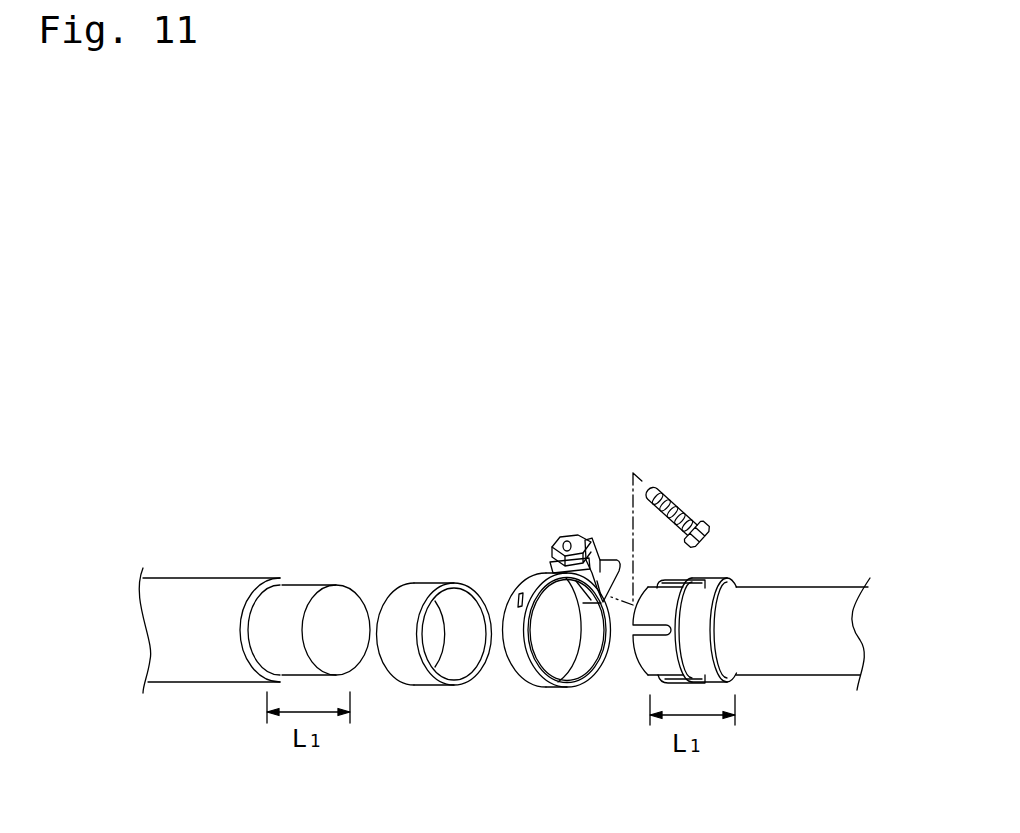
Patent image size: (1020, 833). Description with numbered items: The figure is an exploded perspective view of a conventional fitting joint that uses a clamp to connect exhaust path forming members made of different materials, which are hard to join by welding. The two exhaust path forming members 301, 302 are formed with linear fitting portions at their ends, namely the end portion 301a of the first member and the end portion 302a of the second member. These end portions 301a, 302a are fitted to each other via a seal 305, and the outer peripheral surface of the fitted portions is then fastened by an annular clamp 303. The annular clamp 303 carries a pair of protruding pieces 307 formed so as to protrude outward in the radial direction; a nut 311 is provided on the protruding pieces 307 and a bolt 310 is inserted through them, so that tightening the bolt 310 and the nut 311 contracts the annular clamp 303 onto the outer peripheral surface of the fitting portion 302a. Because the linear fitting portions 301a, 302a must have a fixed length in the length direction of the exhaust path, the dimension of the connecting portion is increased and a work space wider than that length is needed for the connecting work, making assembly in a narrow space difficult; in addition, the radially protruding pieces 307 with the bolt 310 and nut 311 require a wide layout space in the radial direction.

The exhaust path forming member 301 is at (193, 680).
The end portion (linear fitting portion) 301a is at (302, 582).
The seal 305 is at (420, 680).
The annular clamp 303 is at (555, 688).
The nut 311 is at (557, 546).
The protruding pieces 307 is at (607, 560).
The bolt 310 is at (670, 492).
The end portion (linear fitting portion) 302a is at (688, 580).
The exhaust path forming member 302 is at (813, 678).